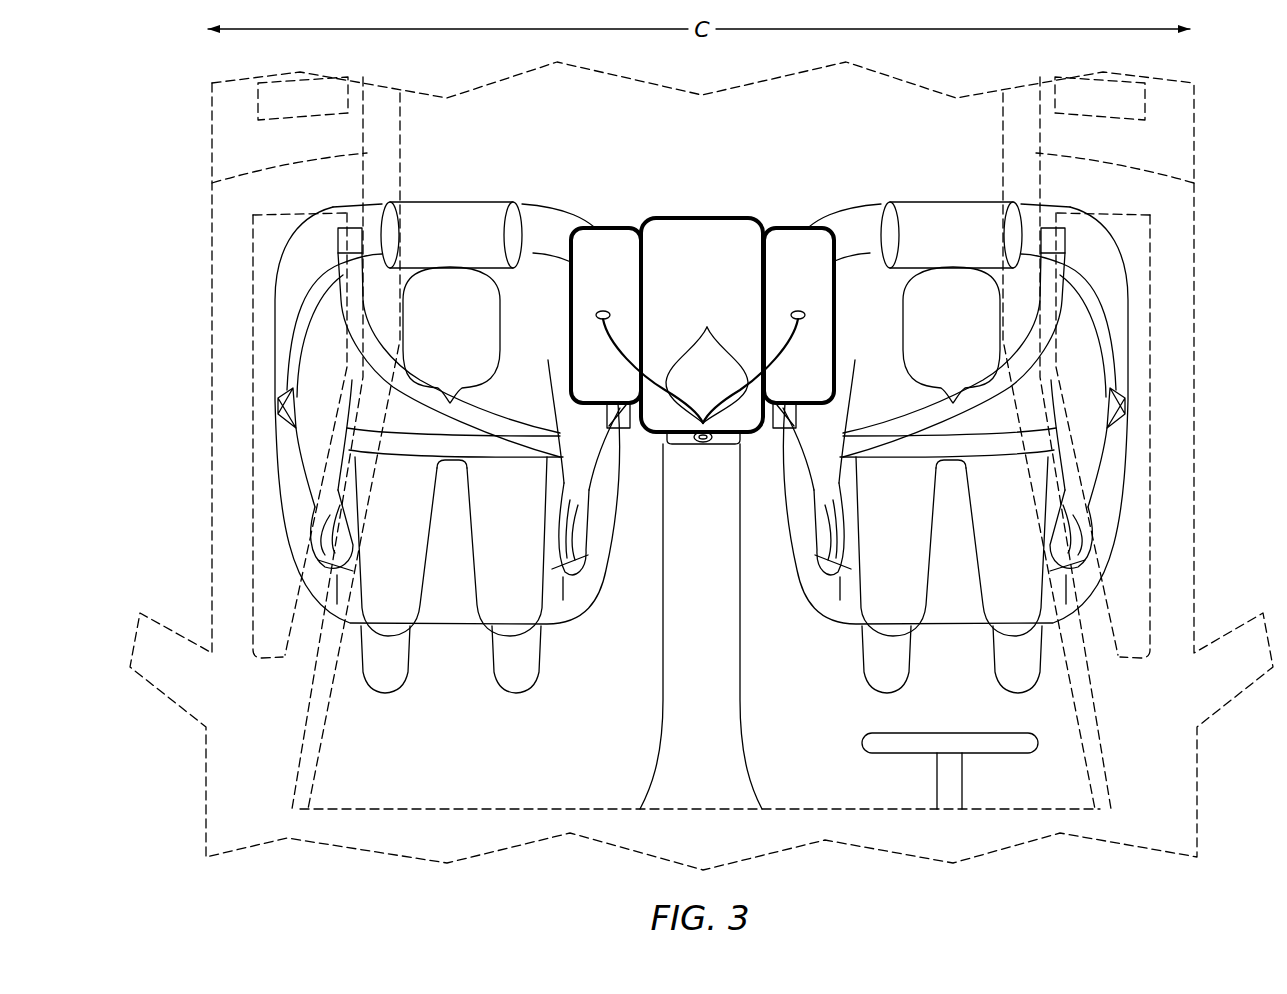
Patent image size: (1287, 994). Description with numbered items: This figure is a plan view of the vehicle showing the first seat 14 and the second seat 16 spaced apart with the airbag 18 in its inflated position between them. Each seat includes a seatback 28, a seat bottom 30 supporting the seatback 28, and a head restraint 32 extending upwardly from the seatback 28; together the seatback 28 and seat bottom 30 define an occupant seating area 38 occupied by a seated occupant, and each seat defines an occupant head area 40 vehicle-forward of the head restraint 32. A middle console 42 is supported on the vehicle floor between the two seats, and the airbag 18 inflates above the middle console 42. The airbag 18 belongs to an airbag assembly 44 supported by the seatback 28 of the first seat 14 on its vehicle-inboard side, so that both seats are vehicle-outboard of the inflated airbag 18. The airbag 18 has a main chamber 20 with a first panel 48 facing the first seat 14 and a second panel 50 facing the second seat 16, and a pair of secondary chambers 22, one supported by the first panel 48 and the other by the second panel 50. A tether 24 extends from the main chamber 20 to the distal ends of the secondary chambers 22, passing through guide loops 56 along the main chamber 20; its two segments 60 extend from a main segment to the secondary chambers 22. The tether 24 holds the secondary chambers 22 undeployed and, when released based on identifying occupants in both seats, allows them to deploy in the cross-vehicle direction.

The first seat 14 is at (1131, 492).
The second seat 16 is at (272, 492).
The airbag 18 is at (684, 212).
The main chamber 20 is at (661, 411).
The secondary chambers 22 is at (569, 329).
The tether 24 is at (747, 345).
The seatback 28 is at (300, 258).
The seat bottom 30 is at (581, 589).
The head restraint 32 is at (455, 225).
The occupant seating area 38 is at (451, 597).
The occupant head area 40 is at (388, 316).
The middle console 42 is at (720, 446).
The airbag assembly 44 is at (766, 178).
The first panel 48 is at (767, 284).
The second panel 50 is at (640, 287).
The guide loops 56 is at (703, 445).
The segments 60 is at (707, 327).